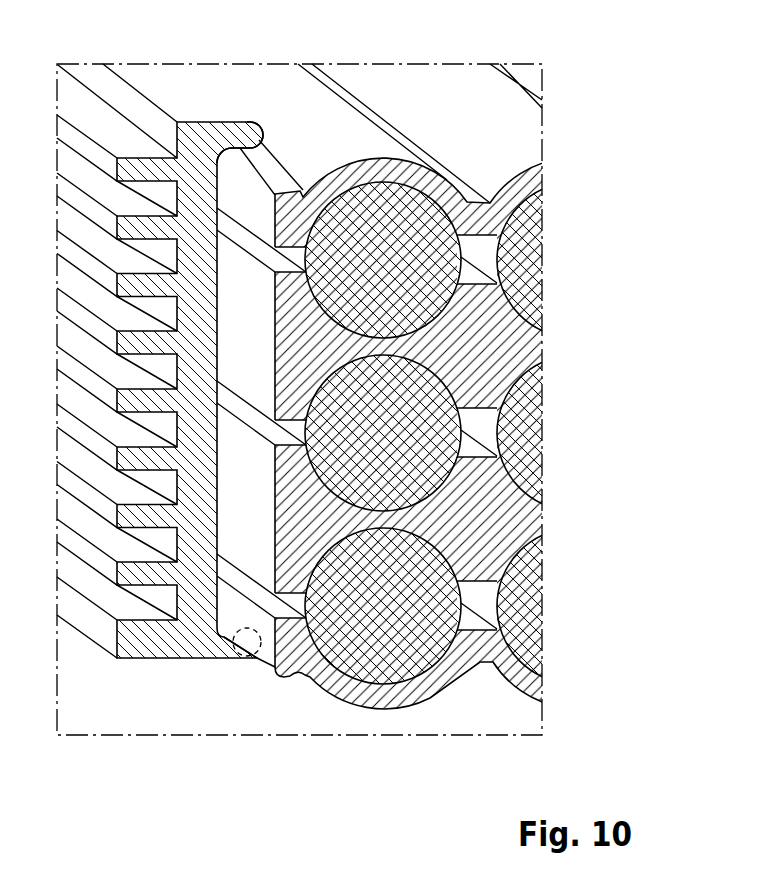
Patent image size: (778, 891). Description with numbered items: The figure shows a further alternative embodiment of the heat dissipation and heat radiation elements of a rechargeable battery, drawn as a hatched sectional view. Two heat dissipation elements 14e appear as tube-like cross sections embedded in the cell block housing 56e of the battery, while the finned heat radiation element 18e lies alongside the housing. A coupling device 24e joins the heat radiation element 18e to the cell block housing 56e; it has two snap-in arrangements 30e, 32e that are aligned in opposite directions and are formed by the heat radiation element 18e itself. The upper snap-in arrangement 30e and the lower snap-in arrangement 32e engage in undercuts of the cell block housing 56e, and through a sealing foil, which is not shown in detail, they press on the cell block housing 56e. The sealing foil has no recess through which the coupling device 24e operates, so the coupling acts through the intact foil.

The heat radiation element 18e is at (195, 135).
The snap-in arrangement 30e is at (247, 133).
The cell block housing 56e is at (380, 168).
The heat dissipation element 14e is at (538, 346).
The snap-in arrangement 32e is at (252, 632).
The coupling device 24e is at (258, 676).